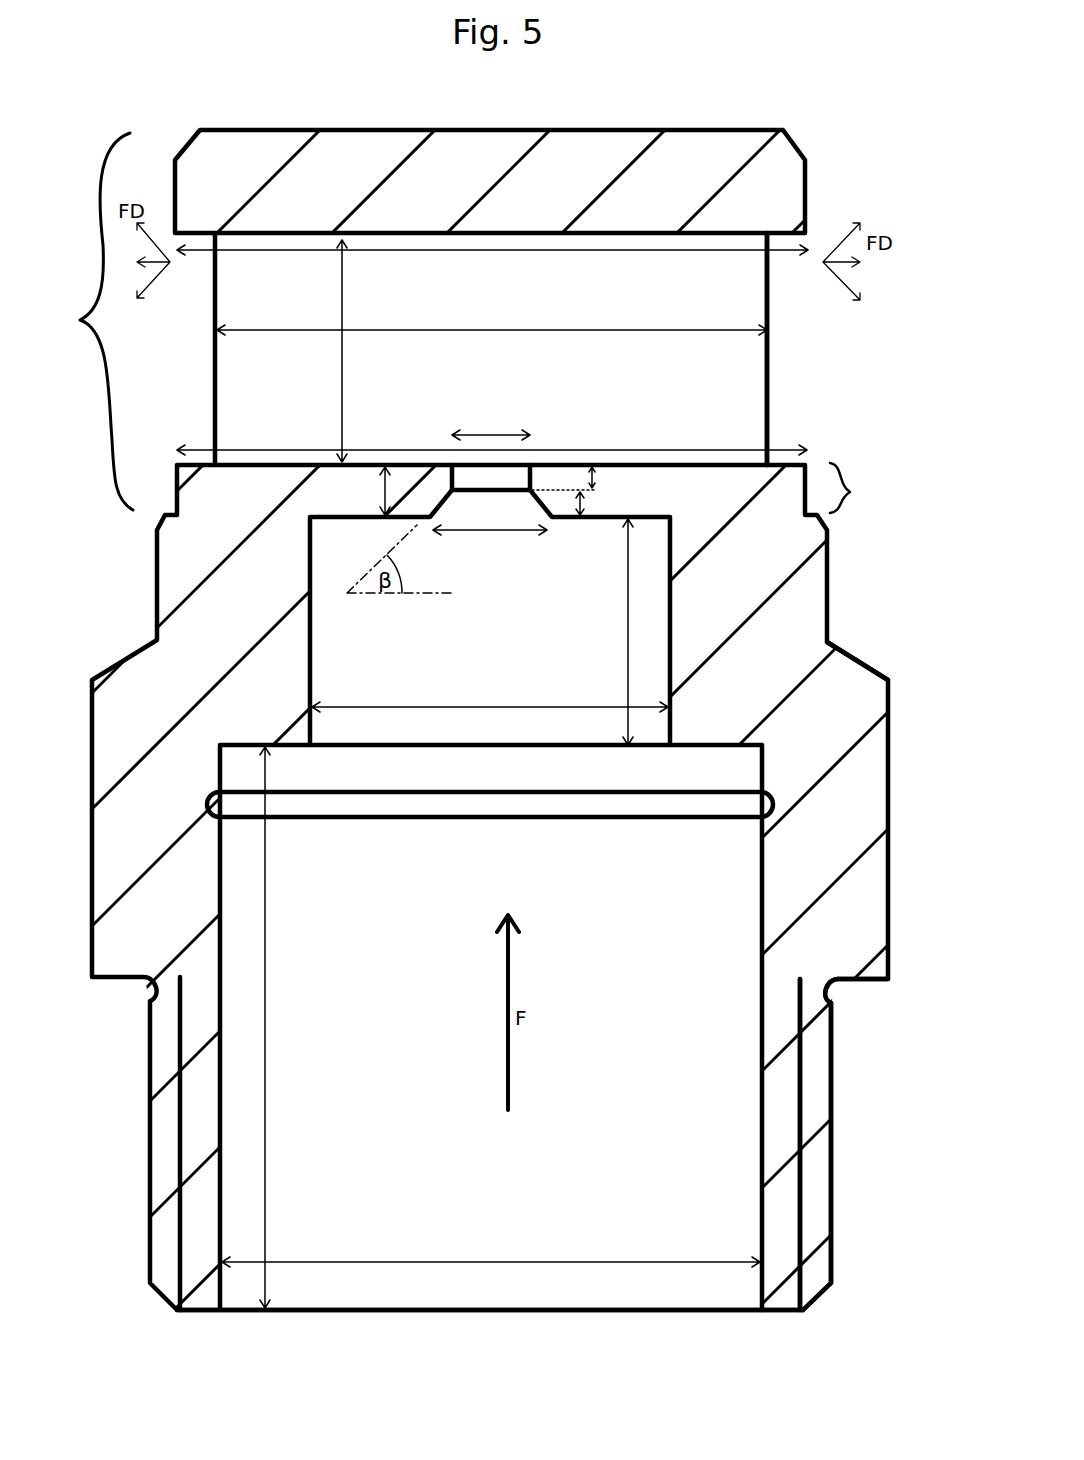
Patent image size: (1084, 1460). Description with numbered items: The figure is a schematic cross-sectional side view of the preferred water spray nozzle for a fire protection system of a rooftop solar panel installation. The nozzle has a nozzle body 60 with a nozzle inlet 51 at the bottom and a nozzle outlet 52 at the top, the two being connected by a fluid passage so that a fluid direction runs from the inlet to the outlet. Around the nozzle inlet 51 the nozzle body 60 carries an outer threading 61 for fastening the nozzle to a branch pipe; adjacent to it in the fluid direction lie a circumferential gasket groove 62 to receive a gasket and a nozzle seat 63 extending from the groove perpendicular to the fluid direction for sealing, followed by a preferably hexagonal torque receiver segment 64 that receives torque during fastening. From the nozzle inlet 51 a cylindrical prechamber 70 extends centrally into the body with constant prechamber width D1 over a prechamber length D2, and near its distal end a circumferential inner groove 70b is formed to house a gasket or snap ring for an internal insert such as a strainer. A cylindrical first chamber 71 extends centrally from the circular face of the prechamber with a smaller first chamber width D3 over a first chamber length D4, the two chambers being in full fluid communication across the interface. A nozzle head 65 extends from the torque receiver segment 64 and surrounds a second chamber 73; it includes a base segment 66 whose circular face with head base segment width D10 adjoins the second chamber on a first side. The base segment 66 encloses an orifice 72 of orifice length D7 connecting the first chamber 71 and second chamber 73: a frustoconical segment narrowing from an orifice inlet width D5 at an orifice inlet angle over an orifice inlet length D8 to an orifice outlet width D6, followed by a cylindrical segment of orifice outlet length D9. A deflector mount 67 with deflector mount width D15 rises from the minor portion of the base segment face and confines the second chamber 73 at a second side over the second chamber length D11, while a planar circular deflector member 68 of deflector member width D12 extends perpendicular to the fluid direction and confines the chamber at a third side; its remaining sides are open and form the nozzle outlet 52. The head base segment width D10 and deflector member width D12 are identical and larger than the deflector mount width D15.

The nozzle inlet 51 is at (510, 1330).
The nozzle outlet 52 is at (790, 373).
The nozzle body 60 is at (862, 830).
The outer threading 61 is at (819, 1077).
The circumferential gasket groove 62 is at (832, 995).
The nozzle seat 63 is at (868, 988).
The torque receiver segment 64 is at (898, 912).
The nozzle head 65 is at (87, 321).
The base segment 66 is at (857, 488).
The deflector mount 67 is at (768, 348).
The deflector member 68 is at (325, 185).
The prechamber 70 is at (583, 1160).
The circumferential inner groove 70b is at (756, 810).
The first chamber 71 is at (493, 677).
The orifice 72 is at (455, 488).
The second chamber 73 is at (588, 387).
The prechamber width D1 is at (395, 1260).
The prechamber length D2 is at (268, 1040).
The first chamber width D3 is at (417, 707).
The first chamber length D4 is at (628, 665).
The orifice inlet width D5 is at (495, 535).
The orifice outlet width D6 is at (500, 425).
The orifice length D7 is at (377, 490).
The orifice inlet length D8 is at (600, 505).
The orifice outlet length D9 is at (600, 490).
The head base segment width D10 is at (232, 448).
The second chamber length D11 is at (343, 287).
The deflector member width D12 is at (580, 253).
The deflector mount width D15 is at (413, 333).